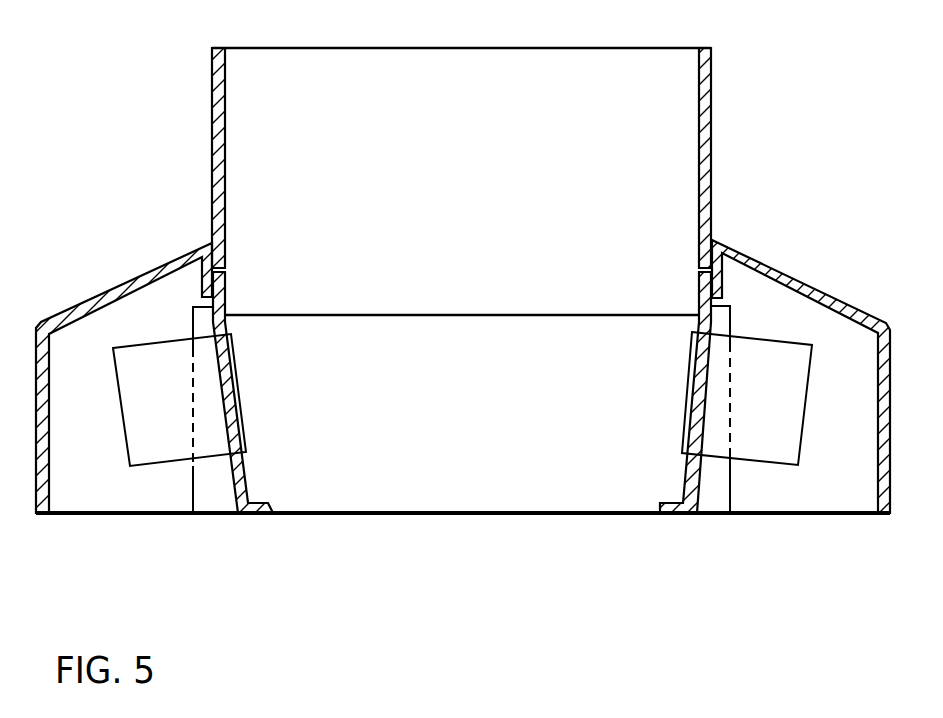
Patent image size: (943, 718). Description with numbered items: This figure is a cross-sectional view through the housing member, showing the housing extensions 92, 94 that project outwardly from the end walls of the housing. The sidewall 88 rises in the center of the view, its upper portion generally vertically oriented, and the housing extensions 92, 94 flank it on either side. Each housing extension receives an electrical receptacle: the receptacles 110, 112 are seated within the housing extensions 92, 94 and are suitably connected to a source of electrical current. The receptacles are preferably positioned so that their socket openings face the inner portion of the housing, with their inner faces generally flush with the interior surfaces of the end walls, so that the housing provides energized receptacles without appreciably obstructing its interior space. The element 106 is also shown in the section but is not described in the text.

The sidewall 88 is at (557, 68).
The housing extension 92 is at (113, 290).
The housing extension 94 is at (785, 273).
The base member 106 is at (486, 433).
The receptacle 110 is at (152, 457).
The receptacle 112 is at (772, 453).